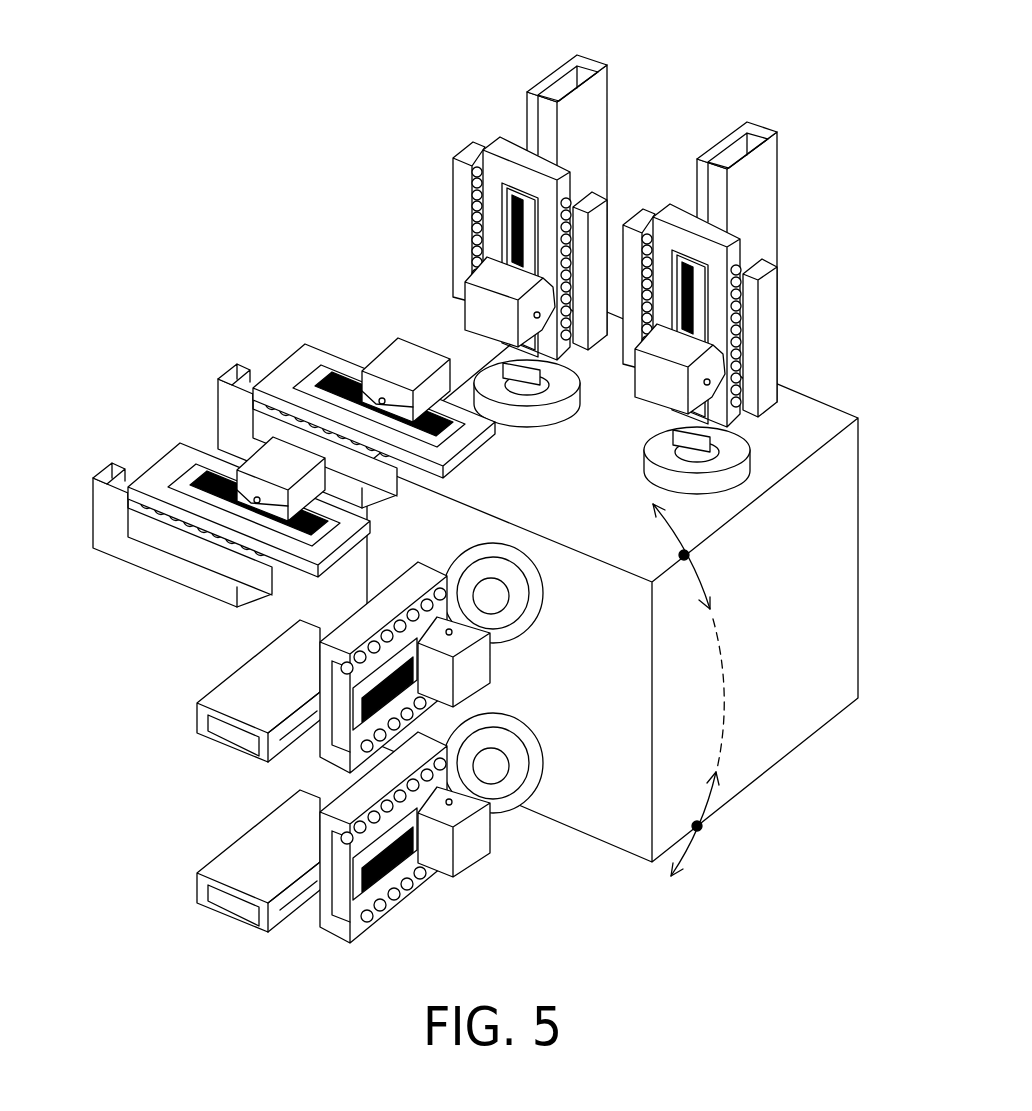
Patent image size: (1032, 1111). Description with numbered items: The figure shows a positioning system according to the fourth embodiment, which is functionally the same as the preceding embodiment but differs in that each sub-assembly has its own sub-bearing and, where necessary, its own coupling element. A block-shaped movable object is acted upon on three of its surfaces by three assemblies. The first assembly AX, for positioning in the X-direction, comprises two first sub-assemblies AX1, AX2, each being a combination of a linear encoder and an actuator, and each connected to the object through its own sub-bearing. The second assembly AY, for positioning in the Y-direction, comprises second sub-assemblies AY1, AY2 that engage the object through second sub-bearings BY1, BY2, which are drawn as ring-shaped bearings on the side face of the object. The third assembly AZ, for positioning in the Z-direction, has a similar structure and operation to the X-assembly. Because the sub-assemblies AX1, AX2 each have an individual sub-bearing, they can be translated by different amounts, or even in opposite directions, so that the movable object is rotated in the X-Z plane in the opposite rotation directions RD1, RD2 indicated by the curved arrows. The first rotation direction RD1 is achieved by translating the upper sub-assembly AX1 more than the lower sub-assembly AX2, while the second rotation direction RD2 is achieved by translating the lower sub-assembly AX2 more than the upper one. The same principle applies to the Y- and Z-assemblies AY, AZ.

The first assembly AX is at (827, 128).
The first sub-assembly AX1 is at (478, 104).
The first sub-assembly AX2 is at (805, 234).
The second assembly AY is at (366, 752).
The second sub-assembly AY1 is at (514, 680).
The second sub-assembly AY2 is at (486, 880).
The third assembly AZ is at (303, 293).
The second sub-bearing BY1 is at (540, 590).
The second sub-bearing BY2 is at (540, 767).
The first rotation direction RD1 is at (700, 582).
The second rotation direction RD2 is at (672, 531).